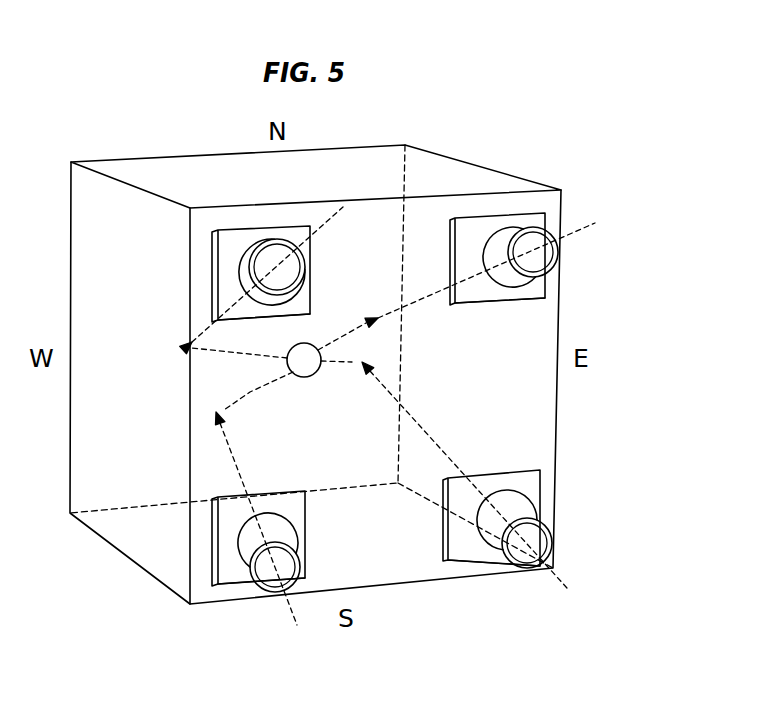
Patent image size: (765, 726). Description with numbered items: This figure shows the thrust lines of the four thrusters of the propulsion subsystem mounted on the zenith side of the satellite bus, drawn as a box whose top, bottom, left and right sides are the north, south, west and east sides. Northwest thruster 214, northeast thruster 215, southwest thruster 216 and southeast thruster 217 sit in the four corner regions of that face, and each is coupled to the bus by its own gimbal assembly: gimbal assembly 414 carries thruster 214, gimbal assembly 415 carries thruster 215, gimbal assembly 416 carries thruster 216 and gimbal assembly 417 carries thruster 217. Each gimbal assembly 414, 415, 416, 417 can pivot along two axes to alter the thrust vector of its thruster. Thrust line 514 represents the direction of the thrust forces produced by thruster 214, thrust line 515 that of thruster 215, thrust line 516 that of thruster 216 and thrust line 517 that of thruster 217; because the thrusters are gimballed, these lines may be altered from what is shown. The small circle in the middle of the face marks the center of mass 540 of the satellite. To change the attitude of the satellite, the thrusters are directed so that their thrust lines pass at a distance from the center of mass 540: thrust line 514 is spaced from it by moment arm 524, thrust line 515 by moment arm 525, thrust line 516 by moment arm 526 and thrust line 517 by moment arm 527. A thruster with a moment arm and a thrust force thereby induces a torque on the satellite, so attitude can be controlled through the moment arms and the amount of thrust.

The northwest thruster 214 is at (260, 238).
The northeast thruster 215 is at (545, 263).
The southwest thruster 216 is at (288, 540).
The southeast thruster 217 is at (523, 515).
The gimbal assembly 414 is at (229, 247).
The gimbal assembly 415 is at (532, 292).
The gimbal assembly 416 is at (228, 570).
The gimbal assembly 417 is at (468, 552).
The thrust line 514 is at (200, 334).
The thrust line 515 is at (420, 297).
The thrust line 516 is at (235, 463).
The thrust line 517 is at (415, 420).
The moment arm 524 is at (250, 357).
The moment arm 525 is at (332, 333).
The moment arm 526 is at (249, 393).
The moment arm 527 is at (351, 361).
The center of mass 540 is at (314, 369).